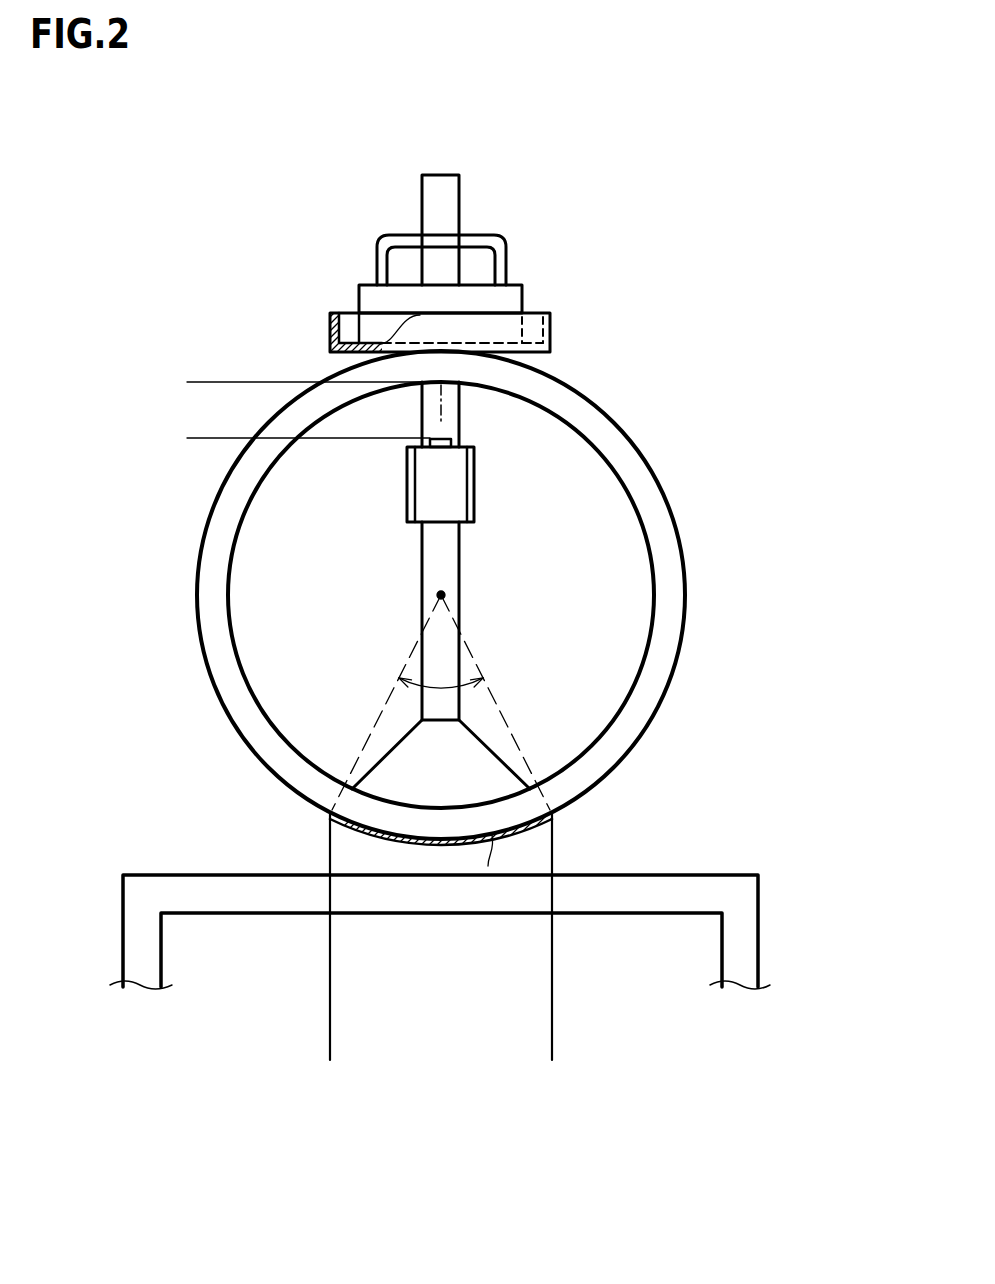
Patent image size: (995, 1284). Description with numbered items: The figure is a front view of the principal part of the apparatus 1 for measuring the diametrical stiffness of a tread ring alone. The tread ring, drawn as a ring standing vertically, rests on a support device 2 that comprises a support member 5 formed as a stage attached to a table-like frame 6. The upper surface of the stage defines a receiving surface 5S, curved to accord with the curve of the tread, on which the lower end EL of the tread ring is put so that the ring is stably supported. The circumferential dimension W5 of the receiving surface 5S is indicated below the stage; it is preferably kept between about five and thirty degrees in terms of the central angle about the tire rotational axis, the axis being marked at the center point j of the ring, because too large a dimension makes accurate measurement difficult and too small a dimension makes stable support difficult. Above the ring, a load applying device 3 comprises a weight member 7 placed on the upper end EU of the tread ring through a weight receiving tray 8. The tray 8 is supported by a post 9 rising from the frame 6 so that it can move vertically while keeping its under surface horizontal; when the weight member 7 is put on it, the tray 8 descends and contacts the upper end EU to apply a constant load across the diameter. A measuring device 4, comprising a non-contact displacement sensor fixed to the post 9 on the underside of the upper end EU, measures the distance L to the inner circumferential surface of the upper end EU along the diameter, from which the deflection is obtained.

The apparatus 1 is at (677, 433).
The support device 2 is at (567, 858).
The load applying device 3 is at (553, 302).
The measuring device 4 is at (440, 490).
The support member 5 is at (553, 843).
The receiving surface 5S is at (397, 838).
The frame 6 is at (758, 933).
The weight member 7 is at (368, 282).
The weight receiving tray 8 is at (328, 337).
The post 9 is at (460, 205).
The upper end of the tread ring EU is at (442, 368).
The lower end of the tread ring EL is at (460, 822).
The distance L is at (195, 382).
The center point j is at (447, 592).
The circumferential dimension of the receiving surface W5 is at (552, 1052).